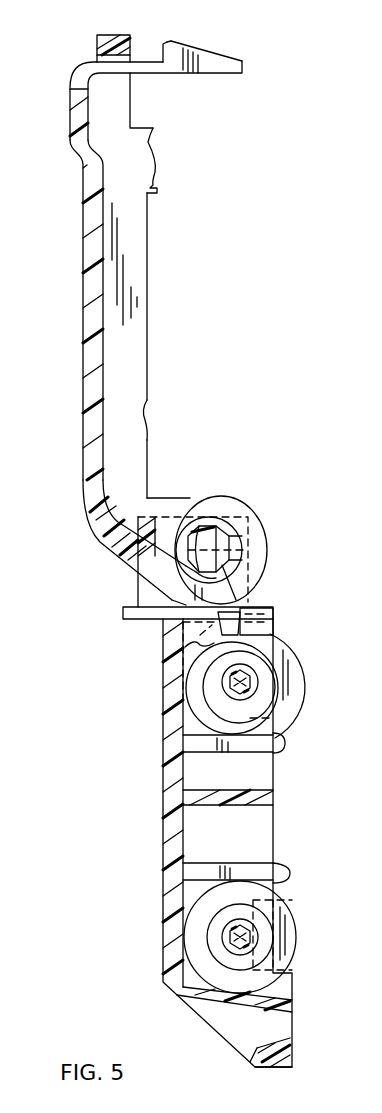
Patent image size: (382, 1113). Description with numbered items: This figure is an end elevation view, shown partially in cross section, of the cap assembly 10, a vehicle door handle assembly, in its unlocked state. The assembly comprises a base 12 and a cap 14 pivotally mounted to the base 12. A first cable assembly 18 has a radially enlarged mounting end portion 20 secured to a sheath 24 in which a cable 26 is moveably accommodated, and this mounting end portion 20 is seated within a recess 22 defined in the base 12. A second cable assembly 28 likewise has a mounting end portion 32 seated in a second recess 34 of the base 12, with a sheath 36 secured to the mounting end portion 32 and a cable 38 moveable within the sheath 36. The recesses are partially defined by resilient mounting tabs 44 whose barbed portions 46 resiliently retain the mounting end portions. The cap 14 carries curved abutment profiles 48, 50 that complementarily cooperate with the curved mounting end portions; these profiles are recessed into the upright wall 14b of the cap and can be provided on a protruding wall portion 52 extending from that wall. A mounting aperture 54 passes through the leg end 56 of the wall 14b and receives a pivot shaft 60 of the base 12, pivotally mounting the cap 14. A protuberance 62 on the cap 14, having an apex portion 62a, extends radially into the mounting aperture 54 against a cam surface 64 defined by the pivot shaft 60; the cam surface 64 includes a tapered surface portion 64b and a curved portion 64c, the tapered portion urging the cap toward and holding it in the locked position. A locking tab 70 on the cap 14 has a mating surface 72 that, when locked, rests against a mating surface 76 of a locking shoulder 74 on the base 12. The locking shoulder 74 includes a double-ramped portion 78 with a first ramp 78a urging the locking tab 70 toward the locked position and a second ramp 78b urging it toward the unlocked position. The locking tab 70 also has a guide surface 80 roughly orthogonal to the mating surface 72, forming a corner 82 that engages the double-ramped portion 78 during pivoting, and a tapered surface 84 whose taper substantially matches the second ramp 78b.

The cap assembly 10 is at (299, 161).
The base 12 is at (162, 791).
The cap 14 is at (80, 324).
The upright wall 14b is at (131, 328).
The cable assembly 18 is at (294, 956).
The mounting end portion 20 is at (182, 983).
The recess 22 is at (270, 994).
The sheath 24 is at (258, 940).
The cable 26 is at (253, 935).
The second cable assembly 28 is at (294, 710).
The mounting end portion 32 is at (300, 682).
The second recess 34 is at (183, 662).
The sheath 36 is at (223, 672).
The cable 38 is at (228, 688).
The resilient mounting tabs 44 is at (213, 750).
The barbed portions 46 is at (277, 738).
The curved abutment surface 48 is at (142, 413).
The curved abutment surface 50 is at (148, 163).
The protruding wall portion 52 is at (135, 150).
The mounting aperture 54 is at (233, 572).
The leg end 56 is at (187, 503).
The pivot shaft 60 is at (180, 562).
The protuberance 62 is at (223, 568).
The apex portion 62a is at (207, 570).
The cam surface 64 is at (209, 527).
The tapered surface portion 64b is at (208, 522).
The curved portion 64c is at (178, 532).
The locking tab 70 is at (208, 71).
The mating surface 72 is at (163, 50).
The locking shoulder 74 is at (278, 1066).
The mating surface 76 is at (256, 1056).
The double-ramped portion 78 is at (282, 1052).
The first ramp 78a is at (266, 1046).
The second ramp 78b is at (274, 1042).
The guide surface 80 is at (171, 41).
The corner 82 is at (166, 41).
The tapered surface 84 is at (205, 50).